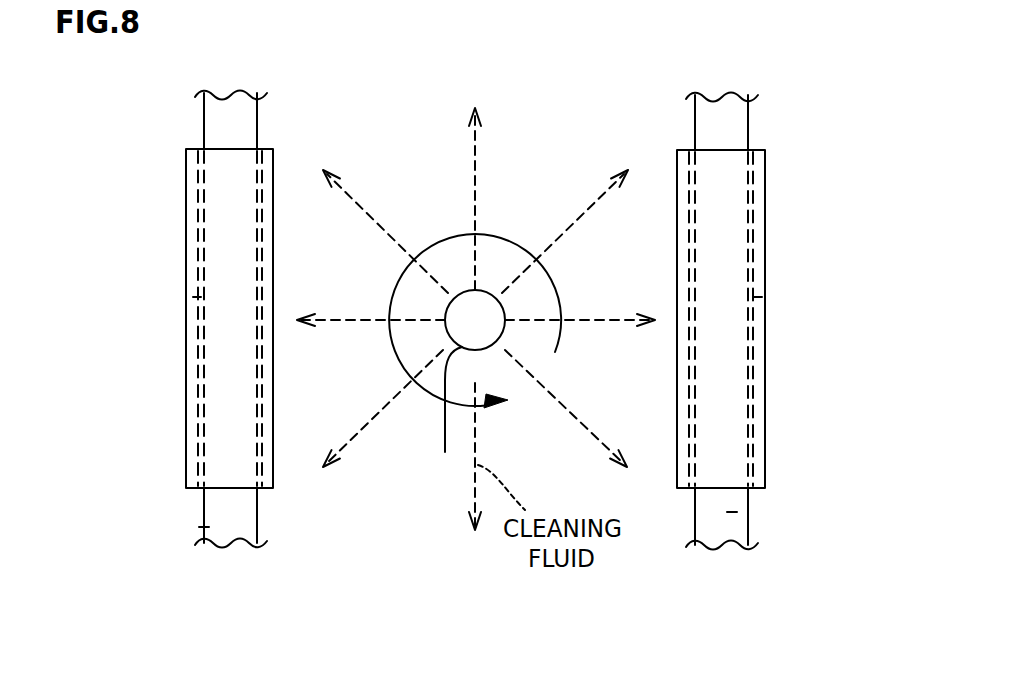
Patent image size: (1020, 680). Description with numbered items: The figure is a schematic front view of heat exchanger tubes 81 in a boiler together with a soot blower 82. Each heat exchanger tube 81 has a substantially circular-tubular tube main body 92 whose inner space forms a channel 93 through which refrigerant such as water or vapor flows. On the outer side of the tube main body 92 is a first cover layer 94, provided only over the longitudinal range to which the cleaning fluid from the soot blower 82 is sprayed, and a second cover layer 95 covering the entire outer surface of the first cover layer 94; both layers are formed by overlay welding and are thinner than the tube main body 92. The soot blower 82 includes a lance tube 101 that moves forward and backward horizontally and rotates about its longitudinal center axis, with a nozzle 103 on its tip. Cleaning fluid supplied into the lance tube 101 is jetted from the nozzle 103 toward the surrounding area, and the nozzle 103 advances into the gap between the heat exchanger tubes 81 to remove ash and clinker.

The heat exchanger tube 81 is at (465, 330).
The soot blower 82 is at (541, 174).
The tube main body 92 is at (204, 132).
The channel 93 is at (207, 527).
The first cover layer 94 is at (200, 297).
The second cover layer 95 is at (187, 332).
The lance tube 101 is at (436, 337).
The nozzle 103 is at (437, 412).